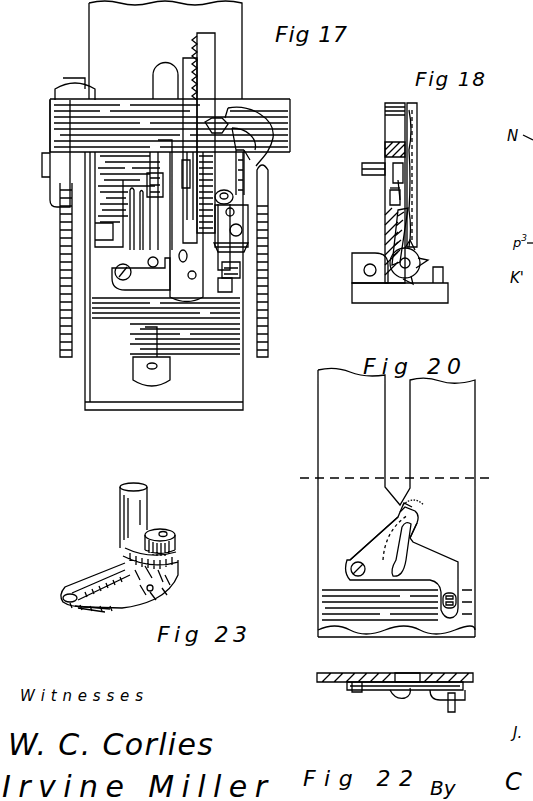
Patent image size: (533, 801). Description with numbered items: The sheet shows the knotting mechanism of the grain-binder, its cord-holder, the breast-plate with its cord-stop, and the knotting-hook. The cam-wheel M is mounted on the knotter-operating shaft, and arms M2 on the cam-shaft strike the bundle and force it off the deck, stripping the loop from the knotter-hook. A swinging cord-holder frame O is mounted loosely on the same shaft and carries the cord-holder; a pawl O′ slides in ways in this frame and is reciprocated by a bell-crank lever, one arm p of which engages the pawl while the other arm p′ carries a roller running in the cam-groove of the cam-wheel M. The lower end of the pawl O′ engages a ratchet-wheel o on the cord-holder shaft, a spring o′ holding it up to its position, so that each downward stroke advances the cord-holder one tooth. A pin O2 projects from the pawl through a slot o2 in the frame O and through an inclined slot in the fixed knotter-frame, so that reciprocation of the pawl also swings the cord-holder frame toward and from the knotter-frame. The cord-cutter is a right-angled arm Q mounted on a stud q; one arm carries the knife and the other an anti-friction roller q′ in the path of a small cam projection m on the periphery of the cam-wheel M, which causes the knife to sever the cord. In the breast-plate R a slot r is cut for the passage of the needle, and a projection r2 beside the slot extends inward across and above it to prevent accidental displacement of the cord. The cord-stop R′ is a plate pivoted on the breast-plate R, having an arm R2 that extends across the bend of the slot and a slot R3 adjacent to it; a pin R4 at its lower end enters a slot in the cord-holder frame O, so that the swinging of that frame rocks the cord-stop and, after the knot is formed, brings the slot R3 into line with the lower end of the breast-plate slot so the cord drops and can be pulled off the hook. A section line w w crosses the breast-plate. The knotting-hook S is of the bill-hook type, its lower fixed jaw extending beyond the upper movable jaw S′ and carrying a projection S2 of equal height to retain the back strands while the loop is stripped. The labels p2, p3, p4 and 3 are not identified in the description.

In FIG. 17, the breast-plate R is at (170, 205).
In FIG. 20, the breast-plate R is at (396, 502).
In FIG. 22, the breast-plate R is at (395, 670).
In FIG. 17, the arms M2 is at (58, 335).
In FIG. 17, the cam-wheel M is at (203, 33).
In FIG. 17, the arm of bell-crank lever p′ is at (187, 58).
In FIG. 20, the arm of bell-crank lever p′ is at (426, 509).
In FIG. 17, the slot r is at (165, 85).
In FIG. 22, the slot r is at (405, 684).
In FIG. 17, the arm of bell-crank lever p is at (186, 172).
In FIG. 17, the cam projection m is at (228, 117).
In FIG. 17, the anti-friction roller q′ is at (233, 197).
In FIG. 17, the right-angled arm Q is at (231, 222).
In FIG. 17, the stud q is at (237, 243).
In FIG. 17, the cord-holder frame O is at (207, 283).
In FIG. 18, the cord-holder frame O is at (401, 183).
In FIG. 17, the pivot screw p3 is at (114, 272).
In FIG. 20, the pivot screw p3 is at (357, 564).
In FIG. 22, the pivot screw p3 is at (355, 691).
In FIG. 17, the block p4 is at (228, 278).
In FIG. 17, the pin R4 is at (227, 280).
In FIG. 20, the pin R4 is at (457, 597).
In FIG. 22, the pin R4 is at (456, 705).
In FIG. 18, the pin O2 is at (366, 175).
In FIG. 18, the slot o2 is at (387, 190).
In FIG. 18, the pawl O′ is at (398, 183).
In FIG. 18, the spring o′ is at (385, 223).
In FIG. 18, the ratchet-wheel o is at (415, 250).
In FIG. 20, the section line w is at (394, 480).
In FIG. 20, the cord-stop R′ is at (402, 562).
In FIG. 22, the cord-stop R′ is at (380, 690).
In FIG. 20, the arm R2 is at (397, 521).
In FIG. 20, the slot R3 is at (422, 538).
In FIG. 20, the point p2 is at (403, 503).
In FIG. 23, the knotter-hook S is at (130, 547).
In FIG. 23, the upper movable jaw S′ is at (123, 577).
In FIG. 23, the projection S2 is at (80, 592).
In FIG. 23, the edge 3 is at (117, 607).
In FIG. 22, the projection r2 is at (400, 692).